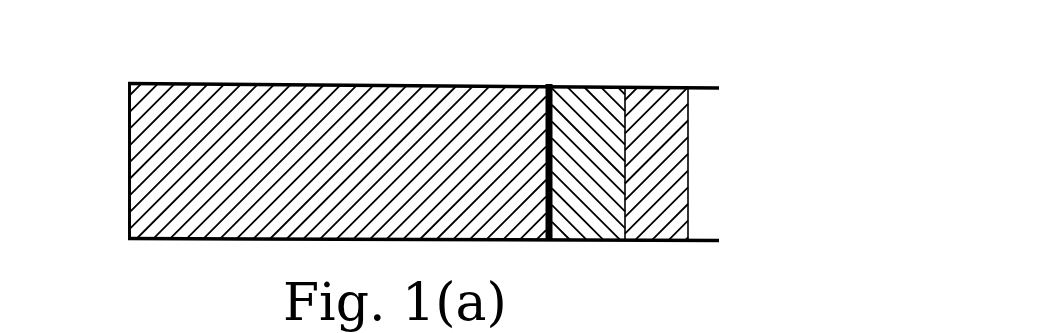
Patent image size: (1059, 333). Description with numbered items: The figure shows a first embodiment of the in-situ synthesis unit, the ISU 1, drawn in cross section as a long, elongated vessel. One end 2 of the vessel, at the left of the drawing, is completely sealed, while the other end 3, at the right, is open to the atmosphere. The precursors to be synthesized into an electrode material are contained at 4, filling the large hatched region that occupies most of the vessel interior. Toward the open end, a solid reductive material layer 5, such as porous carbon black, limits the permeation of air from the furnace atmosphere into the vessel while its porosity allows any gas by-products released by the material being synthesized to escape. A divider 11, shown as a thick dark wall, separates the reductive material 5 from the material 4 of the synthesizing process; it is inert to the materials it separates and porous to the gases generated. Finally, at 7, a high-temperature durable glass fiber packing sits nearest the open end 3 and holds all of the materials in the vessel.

The ISU (vessel) 1 is at (370, 73).
The sealed end 2 is at (90, 189).
The open end 3 is at (725, 179).
The precursors (material of the synthesizing process) 4 is at (356, 174).
The reductive material layer 5 is at (604, 174).
The glass fiber packing 7 is at (666, 174).
The divider 11 is at (551, 85).